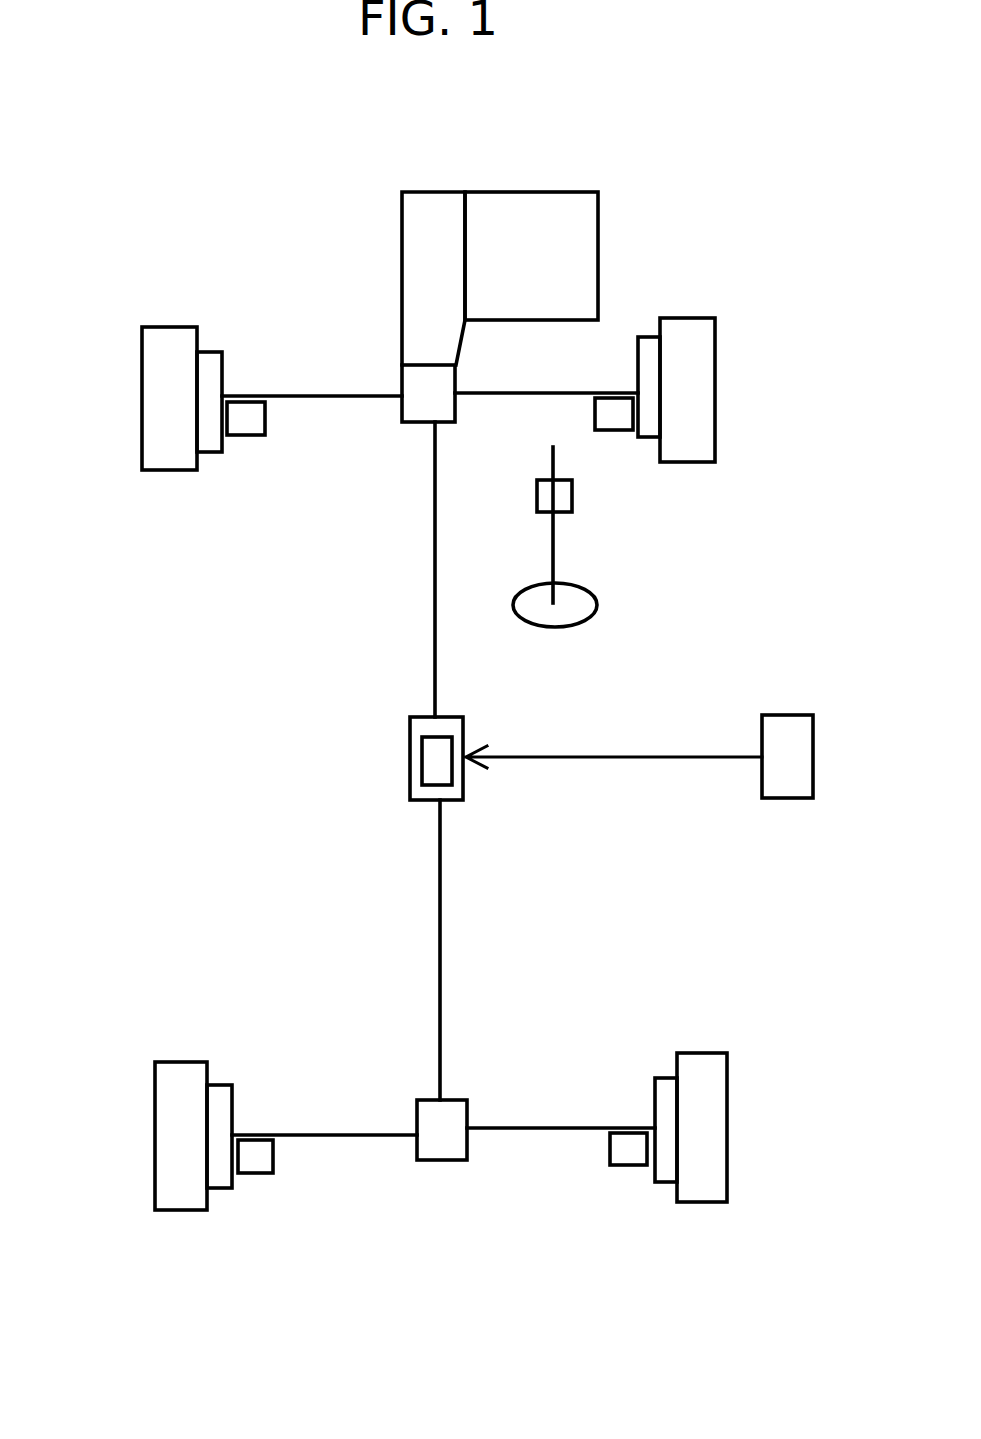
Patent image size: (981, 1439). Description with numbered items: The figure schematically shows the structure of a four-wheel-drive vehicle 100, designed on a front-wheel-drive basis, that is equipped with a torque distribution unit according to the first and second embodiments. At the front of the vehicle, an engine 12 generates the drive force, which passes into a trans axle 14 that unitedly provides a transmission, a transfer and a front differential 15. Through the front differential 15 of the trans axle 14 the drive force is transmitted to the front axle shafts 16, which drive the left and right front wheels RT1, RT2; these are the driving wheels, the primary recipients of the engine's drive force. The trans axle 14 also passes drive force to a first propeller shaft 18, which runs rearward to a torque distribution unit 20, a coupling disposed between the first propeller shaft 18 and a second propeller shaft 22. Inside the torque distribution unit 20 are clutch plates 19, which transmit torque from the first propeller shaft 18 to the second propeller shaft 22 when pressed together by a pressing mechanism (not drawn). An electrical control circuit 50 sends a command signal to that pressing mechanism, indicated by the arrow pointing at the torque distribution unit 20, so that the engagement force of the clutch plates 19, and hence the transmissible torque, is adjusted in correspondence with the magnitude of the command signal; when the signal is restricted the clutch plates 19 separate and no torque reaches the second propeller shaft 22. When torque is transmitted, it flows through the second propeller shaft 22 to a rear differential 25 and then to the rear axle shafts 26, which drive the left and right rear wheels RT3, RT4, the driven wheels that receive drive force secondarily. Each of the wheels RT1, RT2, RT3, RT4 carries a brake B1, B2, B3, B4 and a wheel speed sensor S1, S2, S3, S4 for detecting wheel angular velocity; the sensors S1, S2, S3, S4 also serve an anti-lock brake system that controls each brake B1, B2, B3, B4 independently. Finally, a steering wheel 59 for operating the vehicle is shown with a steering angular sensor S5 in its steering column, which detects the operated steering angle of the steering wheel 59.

The four-wheel drive vehicle 100 is at (145, 240).
The engine 12 is at (577, 203).
The trans axle 14 is at (427, 250).
The front differential 15 is at (405, 420).
The axle shafts 16 is at (280, 397).
The first propeller shaft 18 is at (433, 572).
The clutch plates 19 is at (420, 787).
The torque distribution unit 20 is at (410, 725).
The second propeller shaft 22 is at (440, 980).
The rear differential 25 is at (457, 1135).
The axle shafts 26 is at (300, 1135).
The electrical control circuit 50 is at (777, 715).
The steering wheel 59 is at (542, 613).
The left front wheel RT1 is at (163, 412).
The right front wheel RT2 is at (690, 392).
The left rear wheel RT3 is at (177, 1148).
The right rear wheel RT4 is at (713, 1162).
The brake B1 is at (203, 348).
The brake B2 is at (648, 333).
The brake B3 is at (218, 1080).
The brake B4 is at (665, 1065).
The wheel speed sensor S1 is at (245, 435).
The wheel speed sensor S2 is at (613, 430).
The wheel speed sensor S3 is at (258, 1173).
The wheel speed sensor S4 is at (633, 1165).
The steering angular sensor S5 is at (563, 512).